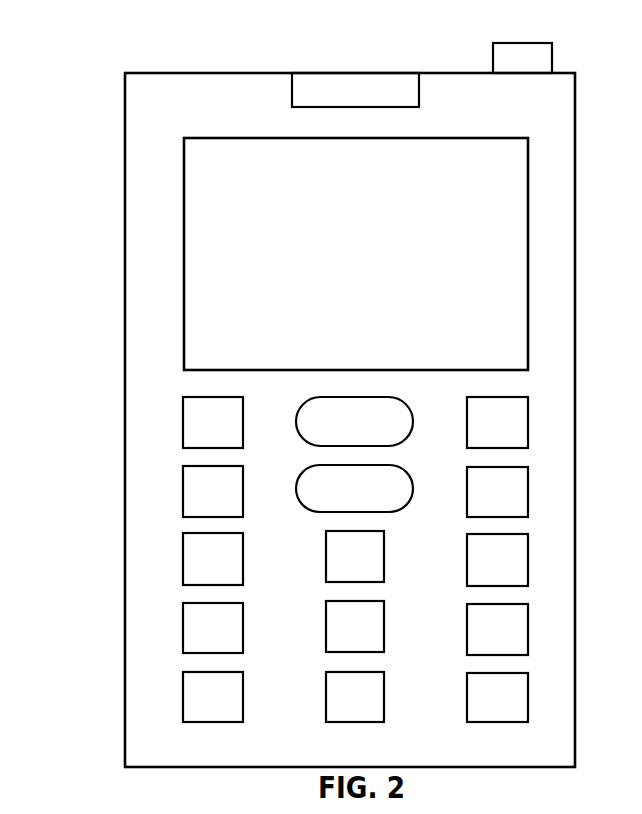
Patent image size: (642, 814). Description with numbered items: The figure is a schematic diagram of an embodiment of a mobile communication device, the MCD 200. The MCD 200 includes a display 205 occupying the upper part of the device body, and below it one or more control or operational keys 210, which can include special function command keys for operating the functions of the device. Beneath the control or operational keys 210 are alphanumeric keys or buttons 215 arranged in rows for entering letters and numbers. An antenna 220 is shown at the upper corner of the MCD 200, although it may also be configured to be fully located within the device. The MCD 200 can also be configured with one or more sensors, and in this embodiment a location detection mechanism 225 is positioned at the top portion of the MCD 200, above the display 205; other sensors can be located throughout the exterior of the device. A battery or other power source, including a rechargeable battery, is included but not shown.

The MCD 200 is at (80, 105).
The display 205 is at (356, 254).
The control or operational keys 210 is at (112, 393).
The alphanumeric keys or buttons 215 is at (88, 522).
The antenna 220 is at (552, 58).
The location detection mechanism 225 is at (355, 90).